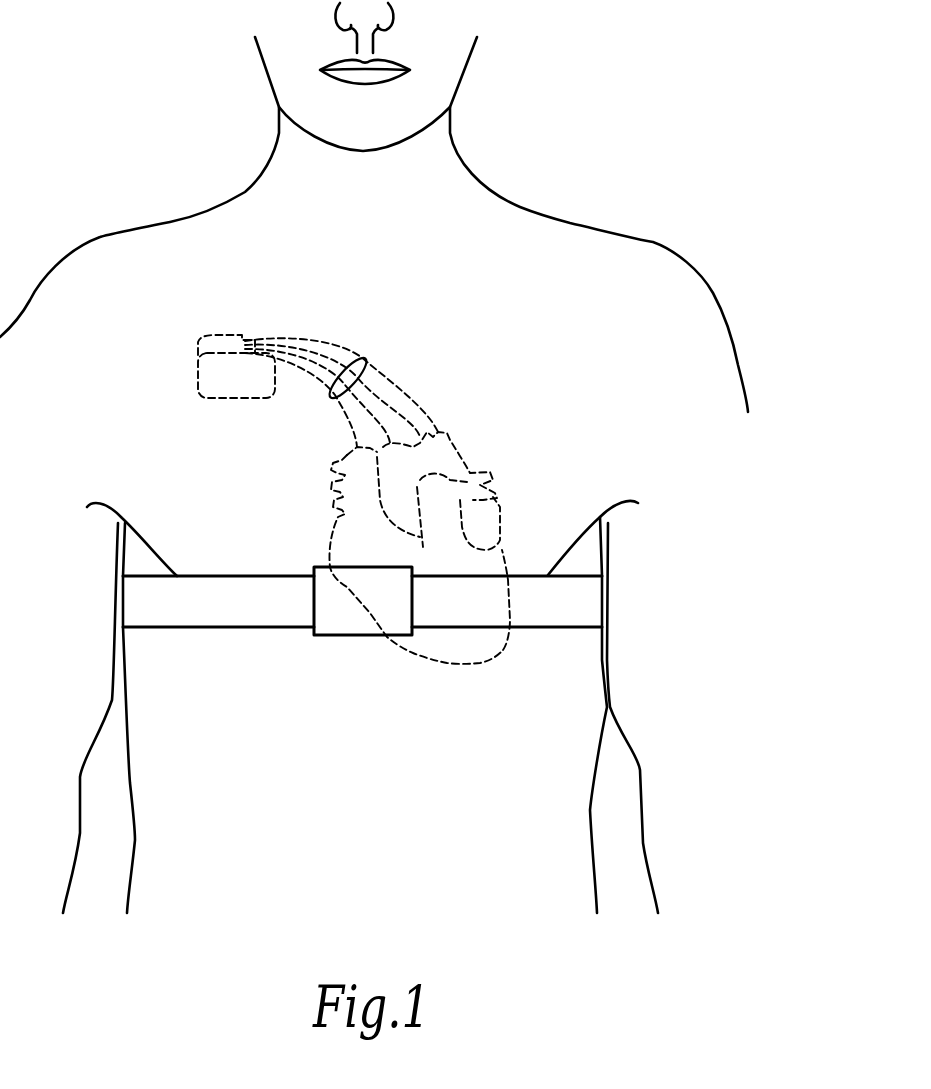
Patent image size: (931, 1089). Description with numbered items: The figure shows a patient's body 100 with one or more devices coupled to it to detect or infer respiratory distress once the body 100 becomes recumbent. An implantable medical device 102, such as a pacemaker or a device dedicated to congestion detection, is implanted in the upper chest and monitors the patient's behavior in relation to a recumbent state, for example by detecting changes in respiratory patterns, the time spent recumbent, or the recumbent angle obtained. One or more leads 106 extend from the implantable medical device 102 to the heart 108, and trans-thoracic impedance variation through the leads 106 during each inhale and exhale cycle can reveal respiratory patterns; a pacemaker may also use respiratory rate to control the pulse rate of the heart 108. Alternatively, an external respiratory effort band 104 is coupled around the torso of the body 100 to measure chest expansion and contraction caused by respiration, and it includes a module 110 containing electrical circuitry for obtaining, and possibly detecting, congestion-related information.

The patient's body 100 is at (743, 113).
The implantable medical device 102 is at (200, 368).
The respiratory effort band 104 is at (220, 628).
The leads 106 is at (363, 360).
The heart 108 is at (483, 665).
The module 110 is at (327, 636).